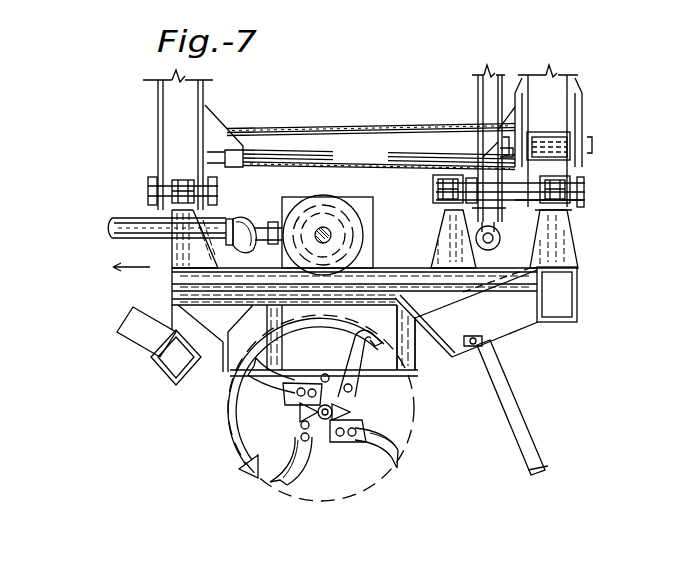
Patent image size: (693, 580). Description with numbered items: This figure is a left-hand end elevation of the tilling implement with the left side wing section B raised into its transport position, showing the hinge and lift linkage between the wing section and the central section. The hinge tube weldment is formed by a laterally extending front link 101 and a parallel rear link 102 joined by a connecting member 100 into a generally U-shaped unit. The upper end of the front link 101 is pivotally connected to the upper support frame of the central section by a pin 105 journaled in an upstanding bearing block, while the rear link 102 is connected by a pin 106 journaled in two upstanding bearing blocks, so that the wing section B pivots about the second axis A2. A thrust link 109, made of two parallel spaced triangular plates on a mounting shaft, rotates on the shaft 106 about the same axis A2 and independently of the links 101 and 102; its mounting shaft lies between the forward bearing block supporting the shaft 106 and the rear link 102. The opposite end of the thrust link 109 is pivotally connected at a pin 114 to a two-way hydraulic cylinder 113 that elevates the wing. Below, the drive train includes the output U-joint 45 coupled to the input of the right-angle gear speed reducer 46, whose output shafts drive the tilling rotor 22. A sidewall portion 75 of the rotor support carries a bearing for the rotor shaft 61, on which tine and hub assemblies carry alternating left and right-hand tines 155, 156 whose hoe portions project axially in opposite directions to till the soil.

The left side wing section B is at (145, 111).
The second axis A2 is at (86, 190).
The front link 101 is at (156, 124).
The connecting member 100 is at (371, 147).
The thrust link 109 is at (491, 74).
The rear link 102 is at (583, 112).
The pin 106 is at (585, 190).
The pin 105 is at (150, 189).
The pin 114 is at (452, 218).
The two-way hydraulic cylinder 113 is at (503, 248).
The output U-joint 45 is at (253, 212).
The right-angle gear speed reducer 46 is at (342, 186).
The sidewall portion 75 is at (416, 378).
The tilling rotor 22 is at (288, 431).
The shaft 61 is at (332, 408).
The right-hand tine 156 is at (311, 472).
The left-hand tine 155 is at (403, 443).